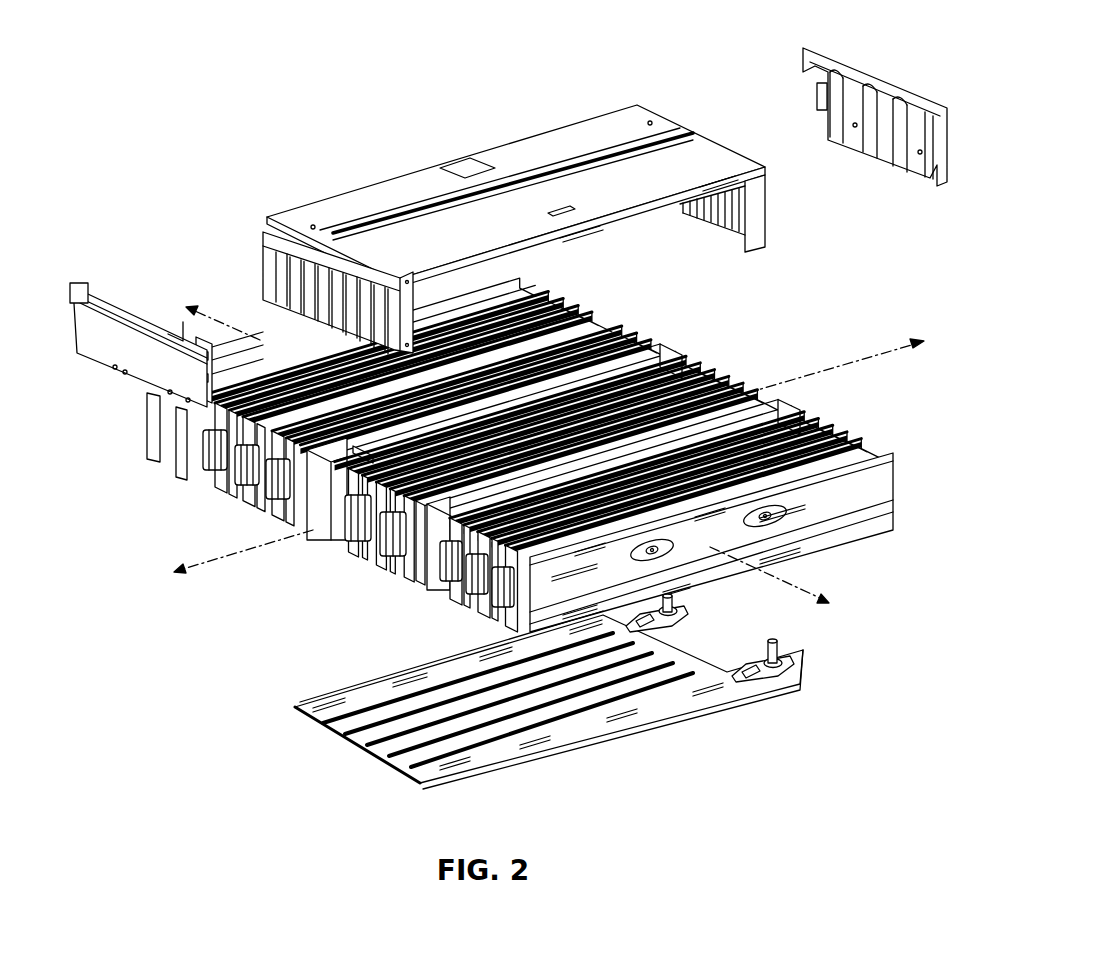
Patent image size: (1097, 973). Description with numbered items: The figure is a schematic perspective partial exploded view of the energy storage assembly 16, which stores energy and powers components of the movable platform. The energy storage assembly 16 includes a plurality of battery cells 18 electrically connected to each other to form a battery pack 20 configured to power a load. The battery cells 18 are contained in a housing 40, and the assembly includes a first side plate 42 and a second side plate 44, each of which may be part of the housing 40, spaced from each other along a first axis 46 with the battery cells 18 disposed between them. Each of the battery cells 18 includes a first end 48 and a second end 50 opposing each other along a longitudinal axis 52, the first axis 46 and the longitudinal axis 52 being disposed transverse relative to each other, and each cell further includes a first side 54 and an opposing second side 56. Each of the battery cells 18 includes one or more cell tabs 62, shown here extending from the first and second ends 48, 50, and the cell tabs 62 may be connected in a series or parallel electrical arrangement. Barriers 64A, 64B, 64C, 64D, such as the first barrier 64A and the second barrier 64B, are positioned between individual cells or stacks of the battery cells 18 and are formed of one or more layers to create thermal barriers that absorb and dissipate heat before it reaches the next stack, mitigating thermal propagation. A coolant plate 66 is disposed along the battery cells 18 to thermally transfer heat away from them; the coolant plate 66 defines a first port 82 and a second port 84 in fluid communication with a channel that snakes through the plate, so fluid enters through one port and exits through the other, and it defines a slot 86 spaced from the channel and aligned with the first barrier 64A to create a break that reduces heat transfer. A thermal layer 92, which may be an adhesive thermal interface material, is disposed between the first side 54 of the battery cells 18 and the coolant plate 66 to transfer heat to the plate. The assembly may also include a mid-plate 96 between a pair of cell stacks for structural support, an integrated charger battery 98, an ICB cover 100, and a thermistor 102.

The energy storage assembly 16 is at (142, 125).
The battery cells 18 is at (486, 452).
The battery pack 20 is at (878, 328).
The housing 40 is at (502, 321).
The first side plate 42 is at (147, 423).
The second side plate 44 is at (893, 507).
The first axis 46 is at (800, 584).
The first end 48 is at (442, 405).
The second end 50 is at (572, 305).
The longitudinal axis 52 is at (888, 358).
The first side 54 is at (591, 463).
The second side 56 is at (752, 384).
The cell tabs 62 is at (197, 458).
The first barrier 64A is at (441, 383).
The second barrier 64B is at (628, 336).
The barrier 64C is at (745, 368).
The barrier 64D is at (784, 412).
The coolant plate 66 is at (570, 705).
The first port 82 is at (778, 657).
The second port 84 is at (676, 602).
The slot 86 is at (665, 692).
The thermal layer 92 is at (423, 752).
The mid-plate 96 is at (683, 360).
The integrated charger battery 98 is at (712, 232).
The ICB cover 100 is at (887, 75).
The thermistor 102 is at (531, 207).